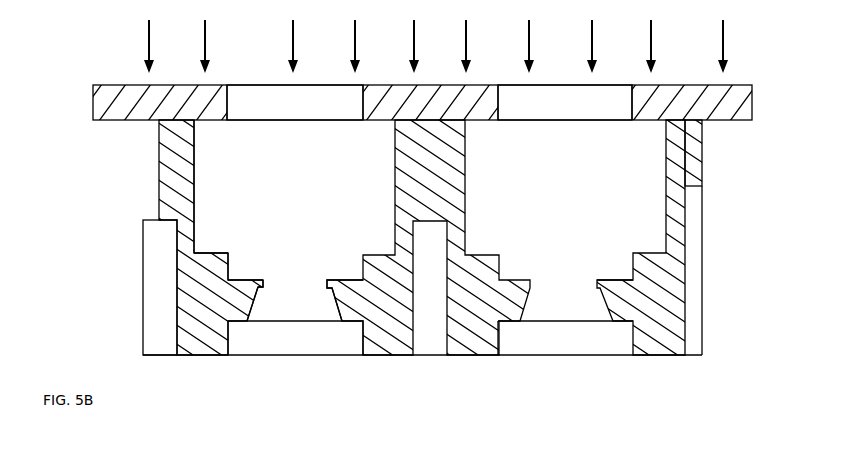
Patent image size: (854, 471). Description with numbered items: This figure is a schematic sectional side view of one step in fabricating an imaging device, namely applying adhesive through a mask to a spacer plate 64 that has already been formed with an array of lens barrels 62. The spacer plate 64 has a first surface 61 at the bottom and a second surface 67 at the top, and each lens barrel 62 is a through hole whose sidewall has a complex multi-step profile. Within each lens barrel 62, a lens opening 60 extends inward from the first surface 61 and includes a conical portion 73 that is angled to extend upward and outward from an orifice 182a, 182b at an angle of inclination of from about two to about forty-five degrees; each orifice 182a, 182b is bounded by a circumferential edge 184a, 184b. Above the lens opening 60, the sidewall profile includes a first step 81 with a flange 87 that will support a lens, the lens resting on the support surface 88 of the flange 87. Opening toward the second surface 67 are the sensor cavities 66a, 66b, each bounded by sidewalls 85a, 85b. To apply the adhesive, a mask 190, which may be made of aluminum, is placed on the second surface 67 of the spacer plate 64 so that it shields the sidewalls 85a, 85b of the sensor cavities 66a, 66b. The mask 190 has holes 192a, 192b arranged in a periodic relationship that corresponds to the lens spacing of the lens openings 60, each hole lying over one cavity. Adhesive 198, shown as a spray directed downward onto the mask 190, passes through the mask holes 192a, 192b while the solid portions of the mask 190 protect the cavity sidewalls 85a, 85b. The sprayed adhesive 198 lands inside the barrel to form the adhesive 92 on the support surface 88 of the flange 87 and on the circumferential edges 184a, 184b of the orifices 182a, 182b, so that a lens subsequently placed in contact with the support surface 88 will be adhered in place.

The adhesive 198 is at (208, 52).
The second surface 67 is at (716, 106).
The mask 190 is at (128, 108).
The mask hole 192a is at (282, 106).
The mask hole 192b is at (537, 106).
The spacer plate 64 is at (158, 172).
The lens barrel 62 is at (140, 307).
The first surface 61 is at (208, 358).
The sidewall 85a is at (199, 173).
The sidewall 85b is at (662, 178).
The sensor cavity 66a is at (279, 174).
The sensor cavity 66b is at (550, 174).
The first step 81 is at (208, 254).
The adhesive 92 is at (228, 266).
The flange 87 is at (236, 280).
The support surface 88 is at (240, 283).
The conical portion 73 is at (253, 288).
The lens opening 60 is at (302, 300).
The orifice 182a is at (292, 262).
The orifice 182b is at (565, 254).
The circumferential edge 184a is at (342, 278).
The circumferential edge 184b is at (607, 279).